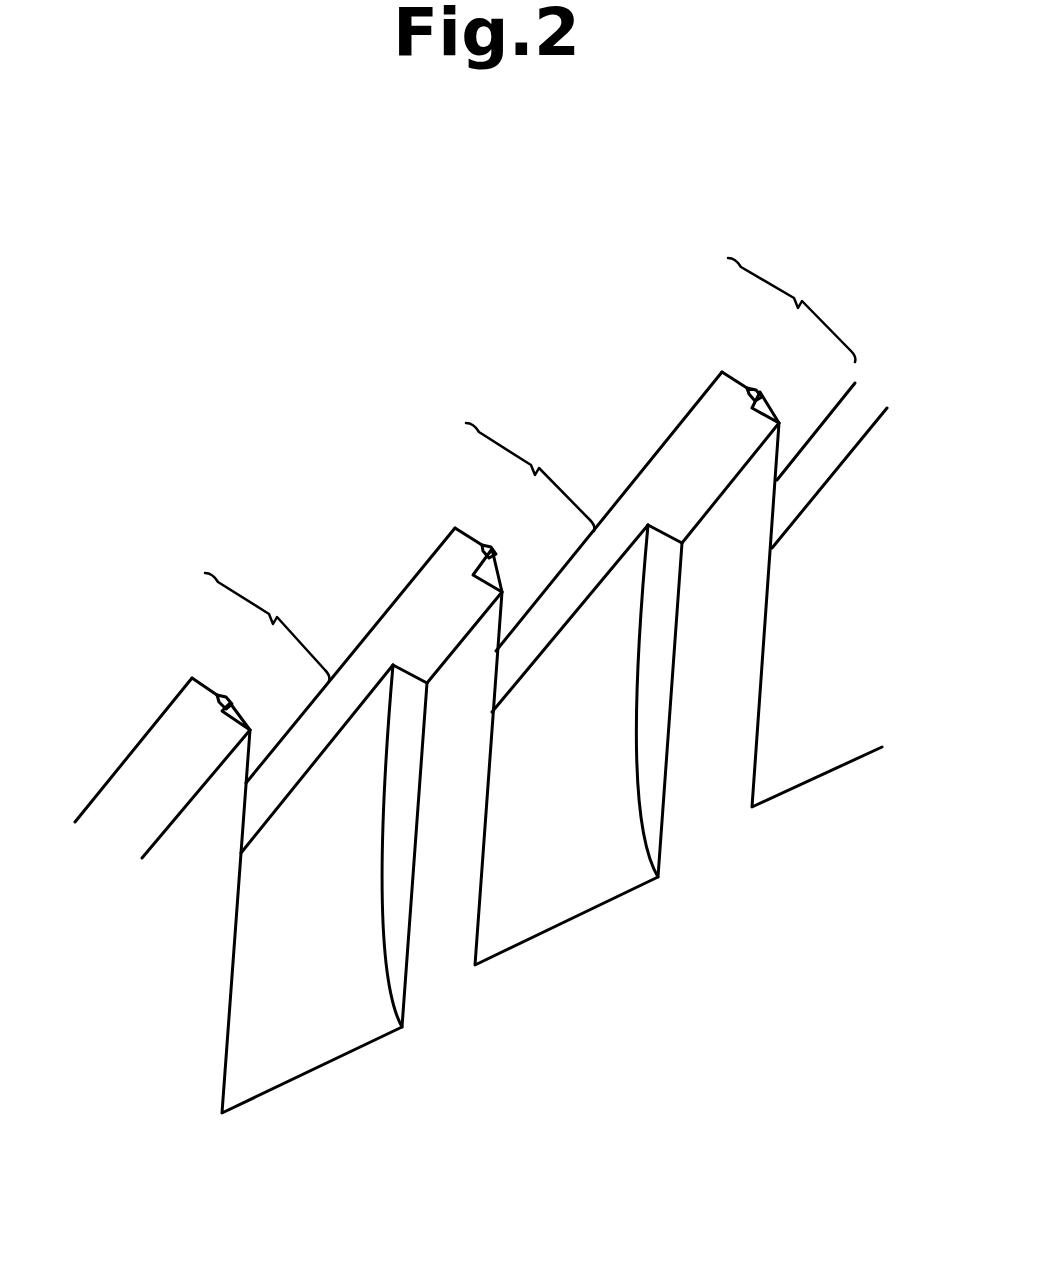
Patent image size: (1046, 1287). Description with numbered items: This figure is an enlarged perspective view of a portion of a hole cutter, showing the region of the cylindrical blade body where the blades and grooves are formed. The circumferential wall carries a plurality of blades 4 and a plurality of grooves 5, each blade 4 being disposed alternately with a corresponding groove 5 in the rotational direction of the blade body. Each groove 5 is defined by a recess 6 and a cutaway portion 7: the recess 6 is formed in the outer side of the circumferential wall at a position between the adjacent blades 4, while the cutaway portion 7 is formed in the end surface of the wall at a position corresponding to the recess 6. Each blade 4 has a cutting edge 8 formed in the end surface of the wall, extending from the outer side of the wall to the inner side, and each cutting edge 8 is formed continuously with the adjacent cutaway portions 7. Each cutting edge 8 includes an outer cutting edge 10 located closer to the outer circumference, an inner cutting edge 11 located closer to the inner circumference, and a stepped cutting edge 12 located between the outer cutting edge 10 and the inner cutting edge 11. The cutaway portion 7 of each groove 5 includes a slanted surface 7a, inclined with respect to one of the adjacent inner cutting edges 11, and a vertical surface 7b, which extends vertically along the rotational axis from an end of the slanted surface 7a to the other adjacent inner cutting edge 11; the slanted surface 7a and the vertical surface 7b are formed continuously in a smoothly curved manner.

The blade 4 is at (478, 512).
The groove 5 is at (592, 727).
The recess 6 is at (307, 1057).
The cutaway portion 7 is at (427, 608).
The slanted surface 7a is at (307, 750).
The vertical surface 7b is at (247, 813).
The cutting edge 8 is at (530, 469).
The outer cutting edge 10 is at (240, 723).
The inner cutting edge 11 is at (203, 680).
The stepped cutting edge 12 is at (224, 697).